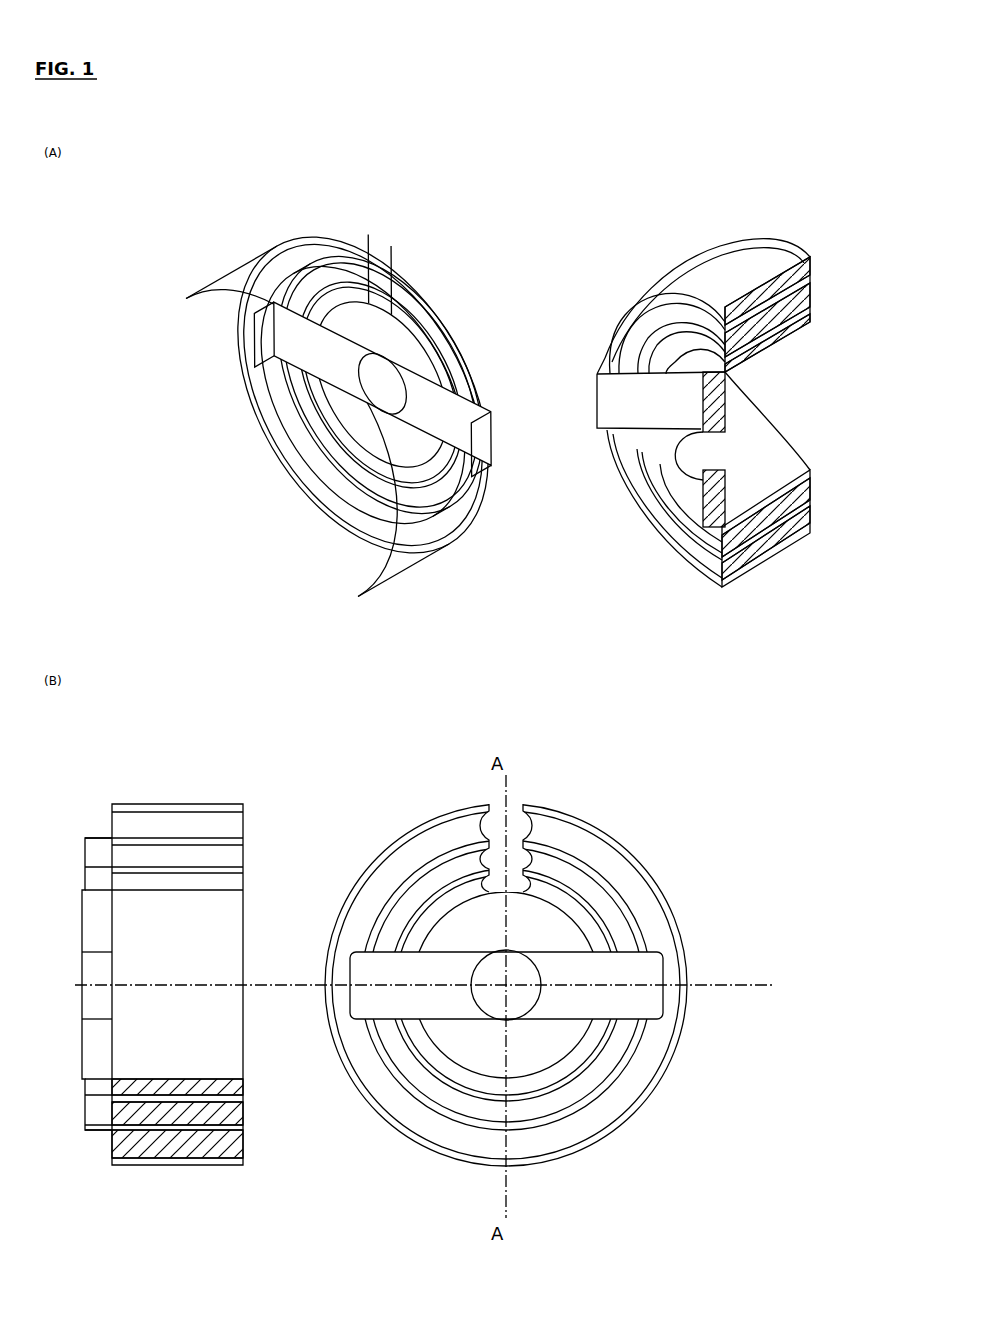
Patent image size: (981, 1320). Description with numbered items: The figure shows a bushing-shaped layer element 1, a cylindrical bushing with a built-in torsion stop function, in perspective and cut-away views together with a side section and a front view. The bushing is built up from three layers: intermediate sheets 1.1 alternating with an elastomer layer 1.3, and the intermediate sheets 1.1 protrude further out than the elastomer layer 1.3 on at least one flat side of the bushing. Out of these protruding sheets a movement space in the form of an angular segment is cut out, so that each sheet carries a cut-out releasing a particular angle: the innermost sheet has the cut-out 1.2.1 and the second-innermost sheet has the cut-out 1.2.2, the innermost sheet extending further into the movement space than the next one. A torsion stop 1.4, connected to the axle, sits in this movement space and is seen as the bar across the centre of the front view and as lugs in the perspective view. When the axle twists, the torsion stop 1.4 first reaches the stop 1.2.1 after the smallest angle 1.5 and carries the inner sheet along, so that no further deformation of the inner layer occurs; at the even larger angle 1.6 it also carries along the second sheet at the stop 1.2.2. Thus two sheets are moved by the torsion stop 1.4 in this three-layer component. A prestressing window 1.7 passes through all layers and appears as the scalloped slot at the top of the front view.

The bushing-shaped layer element 1 is at (212, 283).
The intermediate sheets 1.1 is at (667, 352).
The cut-out (stop) of the inner sheet 1.2.1 is at (290, 320).
The cut-out (stop) of the second sheet 1.2.2 is at (300, 305).
The elastomer layer 1.3 is at (800, 273).
The torsion stop 1.4 is at (282, 335).
The deflection angle of the innermost sheet 1.5 is at (506, 985).
The deflection angle of the second-innermost sheet 1.6 is at (506, 985).
The prestressing window 1.7 is at (503, 827).